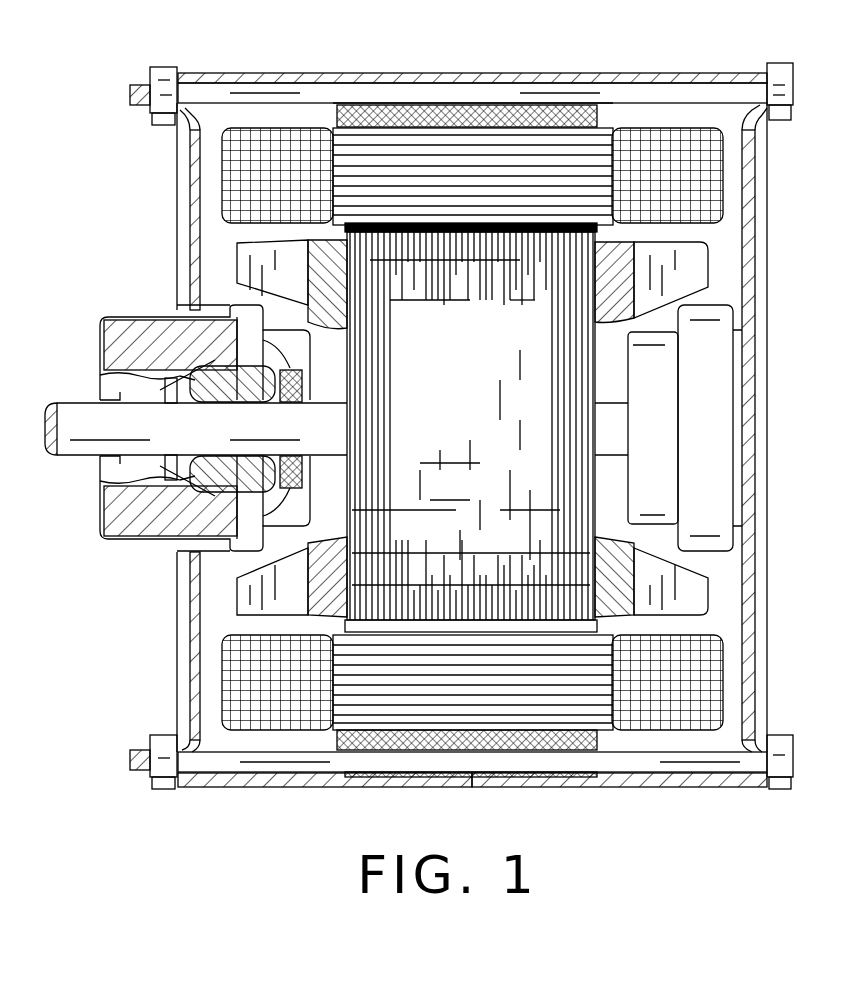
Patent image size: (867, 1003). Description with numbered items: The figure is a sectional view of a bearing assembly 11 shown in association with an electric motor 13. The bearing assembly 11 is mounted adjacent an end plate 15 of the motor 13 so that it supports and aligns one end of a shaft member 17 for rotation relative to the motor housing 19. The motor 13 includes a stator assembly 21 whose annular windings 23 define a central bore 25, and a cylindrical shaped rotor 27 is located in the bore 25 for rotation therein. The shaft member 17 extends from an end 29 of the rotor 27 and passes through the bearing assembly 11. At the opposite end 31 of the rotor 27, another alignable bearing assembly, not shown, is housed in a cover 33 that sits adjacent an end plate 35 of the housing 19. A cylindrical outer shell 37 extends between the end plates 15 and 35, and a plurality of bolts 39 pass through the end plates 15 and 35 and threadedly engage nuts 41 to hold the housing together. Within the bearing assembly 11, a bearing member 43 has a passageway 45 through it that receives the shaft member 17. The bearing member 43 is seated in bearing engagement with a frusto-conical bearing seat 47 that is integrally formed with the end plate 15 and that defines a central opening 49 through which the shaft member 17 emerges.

The bearing assembly 11 is at (204, 356).
The electric motor 13 is at (673, 824).
The end plate 15 is at (178, 608).
The shaft member 17 is at (44, 434).
The motor housing 19 is at (622, 790).
The stator assembly 21 is at (408, 76).
The annular windings 23 is at (443, 152).
The central bore 25 is at (547, 240).
The rotor 27 is at (471, 427).
The end of rotor 29 is at (305, 618).
The opposite end of rotor 31 is at (680, 616).
The cover 33 is at (687, 447).
The end plate 35 is at (755, 600).
The cylindrical outer shell 37 is at (290, 790).
The bolts 39 is at (784, 68).
The nuts 41 is at (158, 70).
The bearing member 43 is at (290, 368).
The passageway 45 is at (243, 404).
The frusto-conical bearing seat 47 is at (222, 401).
The central opening 49 is at (100, 375).